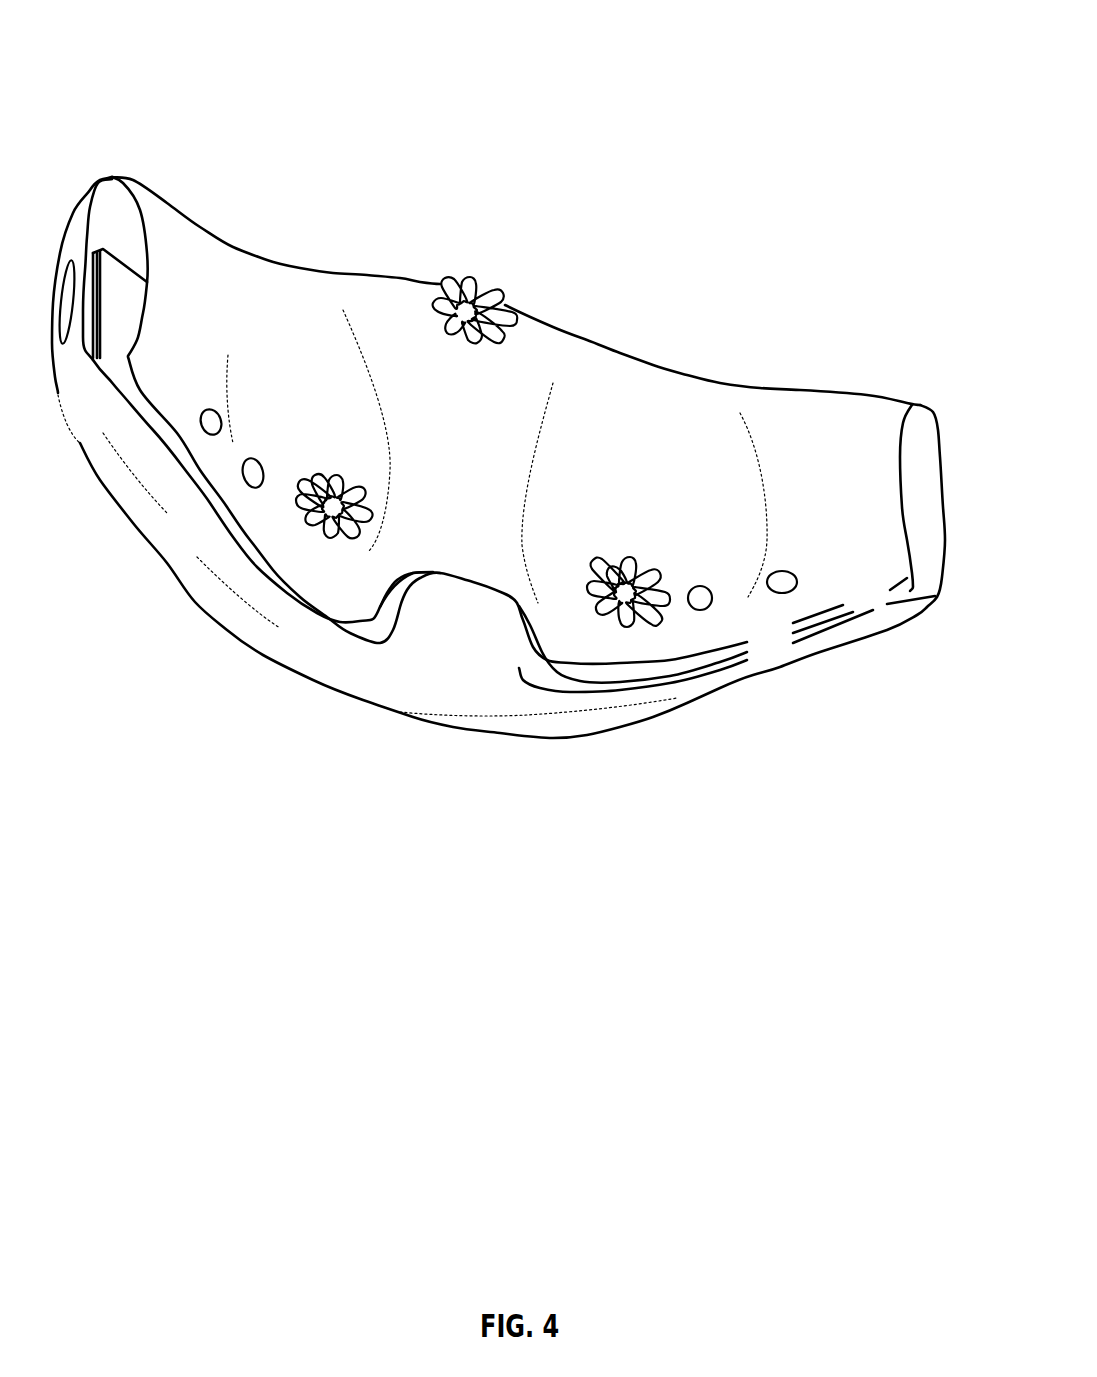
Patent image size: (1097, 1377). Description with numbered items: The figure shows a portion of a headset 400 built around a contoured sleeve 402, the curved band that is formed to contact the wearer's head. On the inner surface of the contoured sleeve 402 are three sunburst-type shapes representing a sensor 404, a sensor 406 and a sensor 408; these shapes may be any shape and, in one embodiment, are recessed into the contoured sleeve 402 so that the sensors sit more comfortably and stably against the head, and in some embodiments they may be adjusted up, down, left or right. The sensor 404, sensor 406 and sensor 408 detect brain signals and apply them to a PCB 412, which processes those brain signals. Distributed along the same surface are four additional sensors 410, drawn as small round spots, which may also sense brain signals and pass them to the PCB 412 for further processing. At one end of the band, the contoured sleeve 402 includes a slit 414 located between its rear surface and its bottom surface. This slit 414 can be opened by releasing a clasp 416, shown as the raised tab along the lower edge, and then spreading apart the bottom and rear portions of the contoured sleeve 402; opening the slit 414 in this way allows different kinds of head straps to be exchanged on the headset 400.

The headset 400 is at (864, 58).
The contoured sleeve 402 is at (733, 385).
The sensor 404 is at (468, 317).
The sensor 406 is at (360, 498).
The sensor 408 is at (623, 607).
The additional sensors 410 is at (213, 420).
The PCB 412 is at (115, 283).
The slit 414 is at (152, 420).
The clasp 416 is at (448, 660).